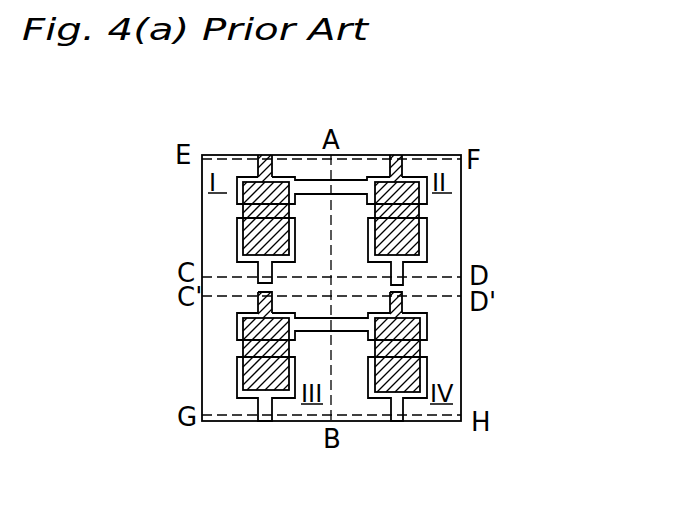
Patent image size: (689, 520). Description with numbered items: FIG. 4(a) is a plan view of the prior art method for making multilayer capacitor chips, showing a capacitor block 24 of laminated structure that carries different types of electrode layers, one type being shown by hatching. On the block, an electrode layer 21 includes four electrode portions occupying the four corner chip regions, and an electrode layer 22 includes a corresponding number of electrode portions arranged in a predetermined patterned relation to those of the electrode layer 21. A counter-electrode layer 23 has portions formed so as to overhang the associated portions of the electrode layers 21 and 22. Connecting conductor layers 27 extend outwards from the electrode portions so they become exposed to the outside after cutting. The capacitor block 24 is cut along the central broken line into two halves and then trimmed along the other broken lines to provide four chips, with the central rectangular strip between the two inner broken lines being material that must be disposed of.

The electrode layer 21 is at (348, 173).
The electrode layer 22 is at (239, 236).
The counter-electrode layer 23 is at (243, 211).
The capacitor block 24 is at (443, 156).
The connecting conductor layers 27 is at (272, 167).